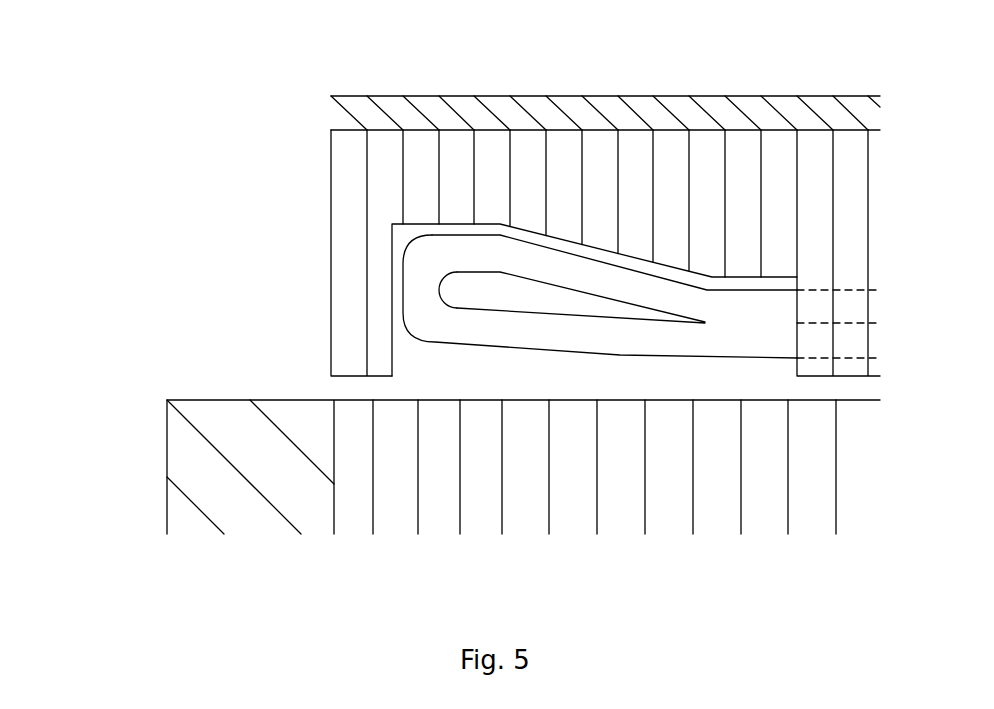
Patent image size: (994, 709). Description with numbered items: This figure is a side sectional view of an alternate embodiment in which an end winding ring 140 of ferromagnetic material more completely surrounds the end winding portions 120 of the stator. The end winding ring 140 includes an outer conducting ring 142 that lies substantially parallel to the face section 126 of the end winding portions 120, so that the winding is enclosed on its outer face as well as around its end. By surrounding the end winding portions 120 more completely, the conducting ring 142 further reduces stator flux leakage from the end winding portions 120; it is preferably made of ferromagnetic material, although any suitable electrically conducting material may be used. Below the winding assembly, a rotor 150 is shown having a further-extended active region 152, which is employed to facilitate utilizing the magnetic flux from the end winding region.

The end winding portions 120 is at (437, 262).
The face section 126 is at (420, 298).
The end winding ring 140 is at (526, 173).
The outer conducting ring 142 is at (348, 280).
The rotor 150 is at (131, 374).
The further-extended active region 152 is at (388, 463).